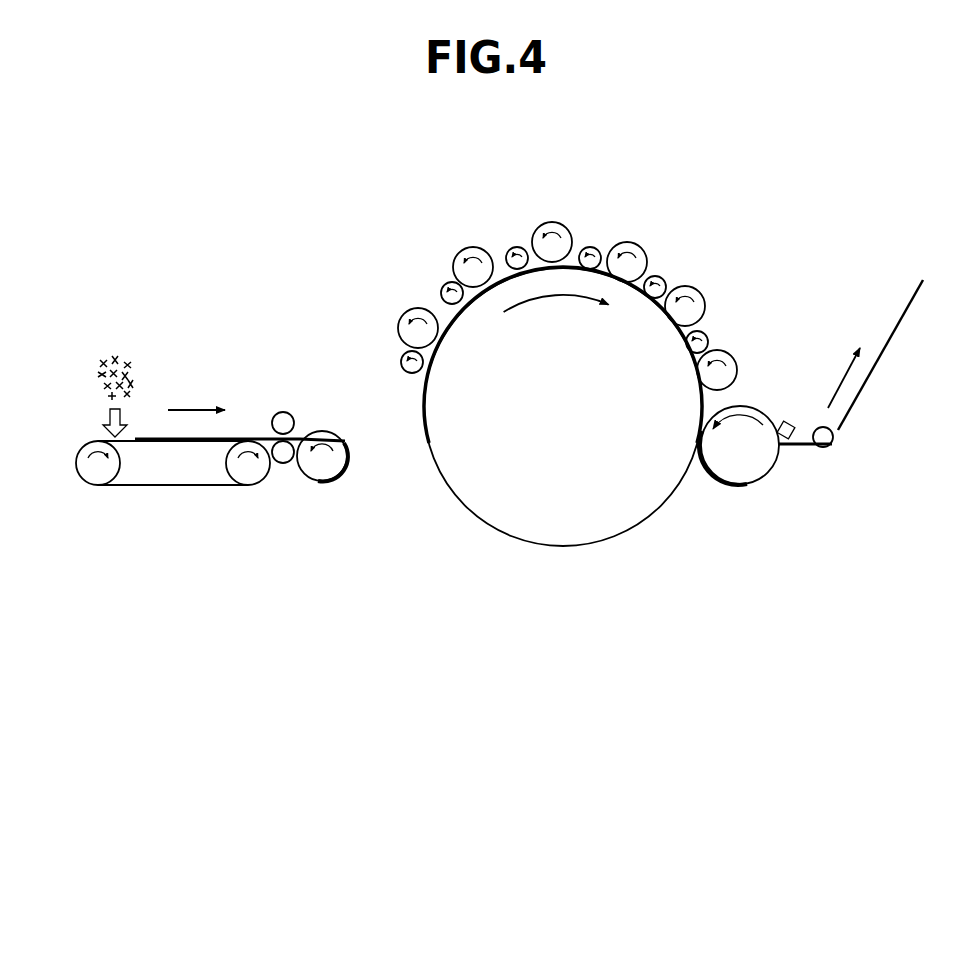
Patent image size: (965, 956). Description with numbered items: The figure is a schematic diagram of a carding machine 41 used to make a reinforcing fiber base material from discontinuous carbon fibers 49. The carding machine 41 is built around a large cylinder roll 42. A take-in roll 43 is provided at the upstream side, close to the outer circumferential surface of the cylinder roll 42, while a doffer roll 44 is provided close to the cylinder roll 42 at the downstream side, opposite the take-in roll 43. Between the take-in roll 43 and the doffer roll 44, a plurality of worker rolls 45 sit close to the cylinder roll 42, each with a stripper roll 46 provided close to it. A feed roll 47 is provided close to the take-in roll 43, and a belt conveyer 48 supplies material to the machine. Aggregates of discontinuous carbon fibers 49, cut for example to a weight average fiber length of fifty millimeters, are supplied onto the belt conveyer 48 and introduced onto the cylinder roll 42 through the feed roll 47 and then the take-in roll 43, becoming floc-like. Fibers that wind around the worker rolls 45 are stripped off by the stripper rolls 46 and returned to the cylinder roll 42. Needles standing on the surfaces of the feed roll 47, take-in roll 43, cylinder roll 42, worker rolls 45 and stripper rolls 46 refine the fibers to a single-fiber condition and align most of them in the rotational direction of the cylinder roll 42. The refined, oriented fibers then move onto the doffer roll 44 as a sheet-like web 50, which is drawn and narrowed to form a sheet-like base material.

The carding machine 41 is at (420, 706).
The cylinder roll 42 is at (497, 532).
The take-in roll 43 is at (353, 482).
The doffer roll 44 is at (760, 485).
The worker roll 45 is at (454, 258).
The stripper roll 46 is at (514, 247).
The feed roll 47 is at (304, 477).
The belt conveyer 48 is at (176, 489).
The discontinuous carbon fibers 49 is at (114, 347).
The sheet-like web 50 is at (877, 378).